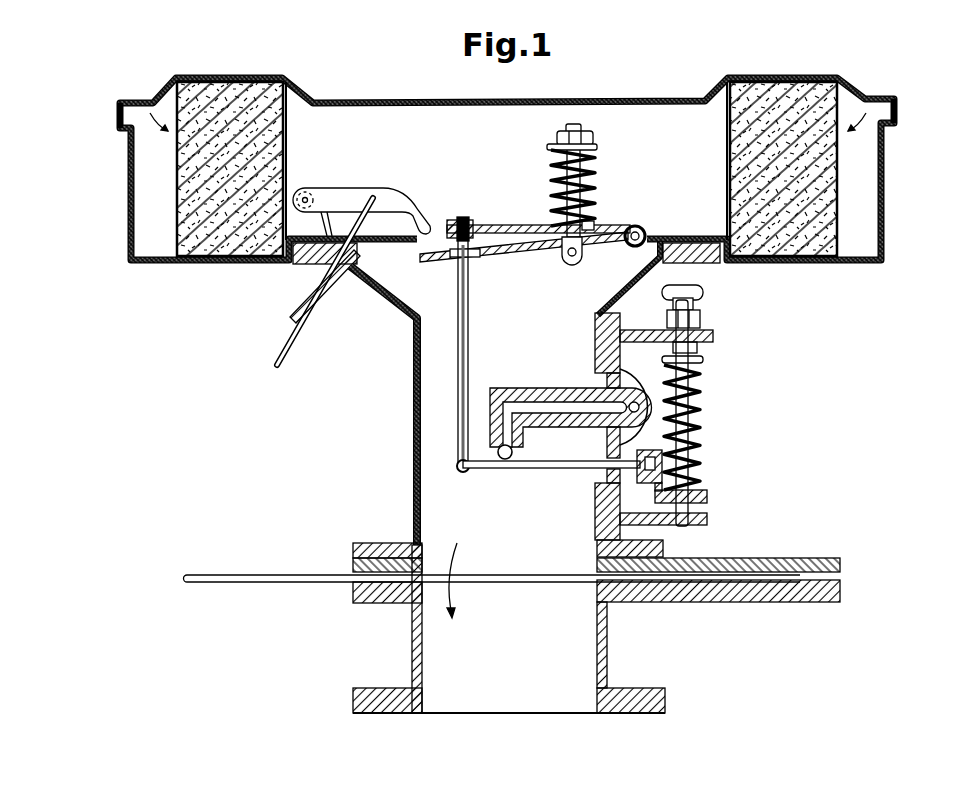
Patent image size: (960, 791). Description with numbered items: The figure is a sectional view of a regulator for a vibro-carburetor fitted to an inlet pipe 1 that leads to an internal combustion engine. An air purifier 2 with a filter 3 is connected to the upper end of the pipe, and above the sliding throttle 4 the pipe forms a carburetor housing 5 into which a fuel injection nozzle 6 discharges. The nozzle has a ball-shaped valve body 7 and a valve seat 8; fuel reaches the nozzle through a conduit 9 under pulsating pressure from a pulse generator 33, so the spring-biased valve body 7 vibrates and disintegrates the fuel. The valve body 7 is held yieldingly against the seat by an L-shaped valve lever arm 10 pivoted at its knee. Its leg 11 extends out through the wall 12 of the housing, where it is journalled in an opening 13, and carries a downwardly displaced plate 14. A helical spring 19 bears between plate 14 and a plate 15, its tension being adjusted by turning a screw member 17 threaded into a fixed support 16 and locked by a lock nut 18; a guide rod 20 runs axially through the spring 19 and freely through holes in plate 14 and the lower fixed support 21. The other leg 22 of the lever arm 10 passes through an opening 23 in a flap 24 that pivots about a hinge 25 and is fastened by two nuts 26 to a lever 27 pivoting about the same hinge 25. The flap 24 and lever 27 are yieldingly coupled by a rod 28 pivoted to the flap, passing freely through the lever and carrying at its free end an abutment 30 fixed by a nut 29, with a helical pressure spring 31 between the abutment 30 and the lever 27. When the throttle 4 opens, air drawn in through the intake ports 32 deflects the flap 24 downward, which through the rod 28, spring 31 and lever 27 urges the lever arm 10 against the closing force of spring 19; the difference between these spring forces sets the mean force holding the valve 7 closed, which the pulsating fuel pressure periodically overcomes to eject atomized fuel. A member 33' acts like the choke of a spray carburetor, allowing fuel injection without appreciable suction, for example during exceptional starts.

The inlet pipe 1 is at (412, 641).
The air purifier 2 is at (128, 208).
The filter 3 is at (210, 260).
The throttle 4 is at (262, 575).
The carburetor housing 5 is at (412, 437).
The fuel injection nozzle 6 is at (492, 398).
The valve body 7 is at (468, 471).
The valve seat 8 is at (512, 452).
The conduit 9 is at (628, 380).
The valve lever arm 10 is at (552, 498).
The leg 11 is at (574, 460).
The wall 12 is at (604, 512).
The opening 13 is at (606, 474).
The plate 14 is at (708, 497).
The plate 15 is at (704, 360).
The fixed support 16 is at (713, 338).
The screw member 17 is at (702, 294).
The lock nut 18 is at (702, 320).
The helical spring 19 is at (700, 406).
The guide rod 20 is at (700, 426).
The lower fixed support 21 is at (708, 518).
The leg 22 is at (466, 322).
The opening 23 is at (478, 256).
The flap 24 is at (518, 250).
The hinge 25 is at (642, 228).
The nuts 26 is at (467, 220).
The lever 27 is at (500, 226).
The rod 28 is at (586, 185).
The nut 29 is at (590, 129).
The abutment 30 is at (593, 142).
The helical pressure spring 31 is at (582, 172).
The intake ports 32 is at (121, 120).
The pulse generator 33 is at (608, 307).
The member 33' is at (354, 262).